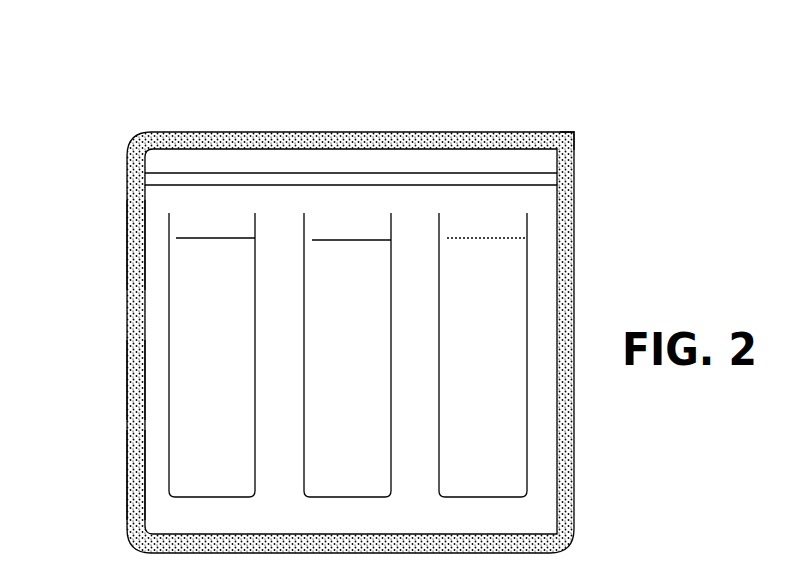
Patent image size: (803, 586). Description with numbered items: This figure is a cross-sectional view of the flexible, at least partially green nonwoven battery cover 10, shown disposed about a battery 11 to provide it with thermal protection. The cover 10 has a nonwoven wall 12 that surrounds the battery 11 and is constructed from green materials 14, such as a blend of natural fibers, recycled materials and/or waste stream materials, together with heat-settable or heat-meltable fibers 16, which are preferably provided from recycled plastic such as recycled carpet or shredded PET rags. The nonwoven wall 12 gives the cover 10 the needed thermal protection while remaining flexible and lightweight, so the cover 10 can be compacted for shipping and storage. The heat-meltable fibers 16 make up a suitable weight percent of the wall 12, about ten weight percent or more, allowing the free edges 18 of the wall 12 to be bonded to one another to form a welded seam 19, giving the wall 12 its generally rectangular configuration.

The cover 10 is at (224, 106).
The battery 11 is at (207, 322).
The nonwoven wall 12 is at (128, 242).
The green materials 14 is at (128, 365).
The heat-meltable fibers 16 is at (130, 458).
The free edges 18 is at (552, 132).
The welded seam 19 is at (568, 133).